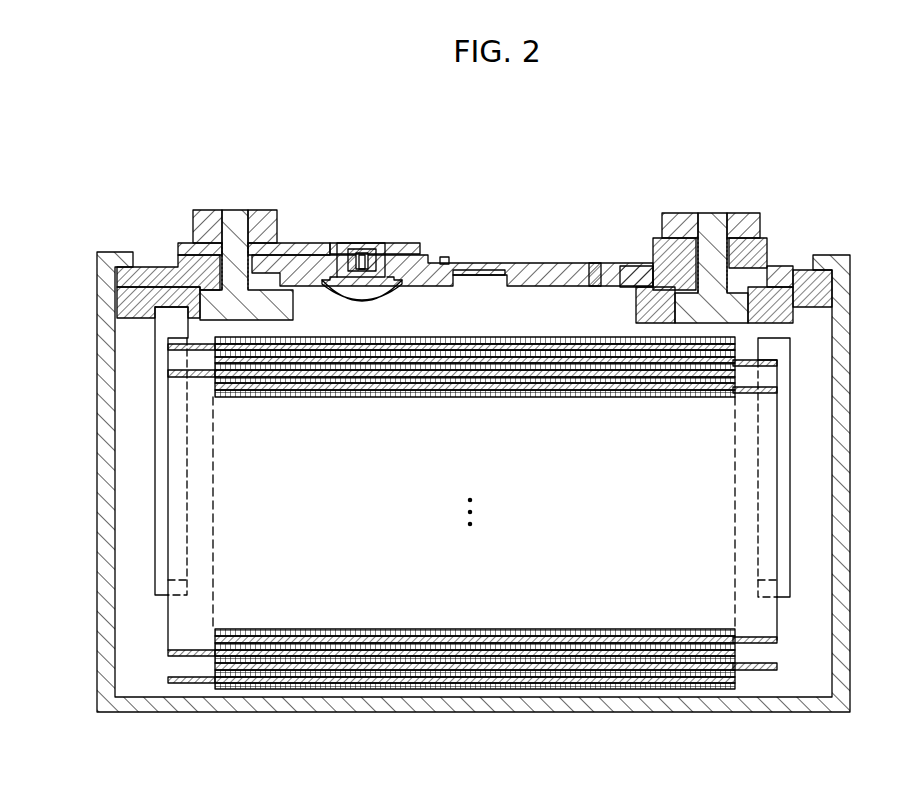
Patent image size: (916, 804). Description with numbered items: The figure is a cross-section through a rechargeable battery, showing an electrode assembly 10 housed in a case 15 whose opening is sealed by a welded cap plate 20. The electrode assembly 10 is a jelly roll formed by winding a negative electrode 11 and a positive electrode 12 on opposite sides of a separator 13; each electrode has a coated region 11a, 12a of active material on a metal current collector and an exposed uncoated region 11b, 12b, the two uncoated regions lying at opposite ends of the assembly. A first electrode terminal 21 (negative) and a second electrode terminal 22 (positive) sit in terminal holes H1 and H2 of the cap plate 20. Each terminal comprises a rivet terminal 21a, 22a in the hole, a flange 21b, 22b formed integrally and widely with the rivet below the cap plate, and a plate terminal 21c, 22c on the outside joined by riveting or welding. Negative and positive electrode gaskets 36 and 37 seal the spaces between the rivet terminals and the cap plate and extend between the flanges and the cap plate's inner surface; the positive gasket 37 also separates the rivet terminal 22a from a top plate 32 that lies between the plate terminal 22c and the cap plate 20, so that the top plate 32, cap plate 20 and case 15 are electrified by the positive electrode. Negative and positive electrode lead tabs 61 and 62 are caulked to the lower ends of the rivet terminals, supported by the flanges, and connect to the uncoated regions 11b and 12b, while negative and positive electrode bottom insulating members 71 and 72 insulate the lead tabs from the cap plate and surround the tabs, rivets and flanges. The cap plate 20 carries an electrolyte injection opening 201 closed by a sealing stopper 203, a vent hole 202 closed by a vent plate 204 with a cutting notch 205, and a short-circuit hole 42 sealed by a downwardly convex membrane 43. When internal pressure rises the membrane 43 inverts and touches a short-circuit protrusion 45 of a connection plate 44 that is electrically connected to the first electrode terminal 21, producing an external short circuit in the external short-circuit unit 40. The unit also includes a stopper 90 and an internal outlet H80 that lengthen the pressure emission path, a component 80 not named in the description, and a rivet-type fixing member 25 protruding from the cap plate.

The electrode assembly 10 is at (584, 698).
The negative electrode 11 is at (312, 762).
The coated region 11a is at (292, 691).
The uncoated region 11b is at (185, 691).
The positive electrode 12 is at (780, 765).
The coated region 12a is at (662, 691).
The uncoated region 12b is at (760, 691).
The separator 13 is at (482, 691).
The case 15 is at (851, 430).
The cap plate 20 is at (549, 268).
The first electrode terminal 21 is at (242, 207).
The rivet terminal 21a is at (244, 324).
The flange 21b is at (154, 305).
The plate terminal 21c is at (260, 224).
The second electrode terminal 22 is at (712, 210).
The rivet terminal 22a is at (790, 344).
The flange 22b is at (686, 330).
The plate terminal 22c is at (752, 228).
The fixing member 25 is at (443, 257).
The top plate 32 is at (755, 263).
The negative electrode gasket 36 is at (197, 277).
The positive electrode gasket 37 is at (690, 236).
The external short-circuit unit 40 is at (350, 241).
The short-circuit hole 42 is at (395, 292).
The membrane 43 is at (343, 292).
The connection plate 44 is at (190, 252).
The short-circuit protrusion 45 is at (352, 302).
The negative electrode lead tab 61 is at (152, 437).
The positive electrode lead tab 62 is at (793, 570).
The negative electrode bottom insulating member 71 is at (127, 305).
The positive electrode bottom insulating member 72 is at (817, 307).
The short circuit plate 80 is at (399, 242).
The stopper 90 is at (359, 245).
The terminal hole H1 is at (230, 250).
The terminal hole H2 is at (735, 240).
The internal outlet H80 is at (364, 302).
The electrolyte injection opening 201 is at (597, 290).
The vent hole 202 is at (478, 288).
The sealing stopper 203 is at (598, 265).
The vent plate 204 is at (503, 268).
The notch 205 is at (478, 240).